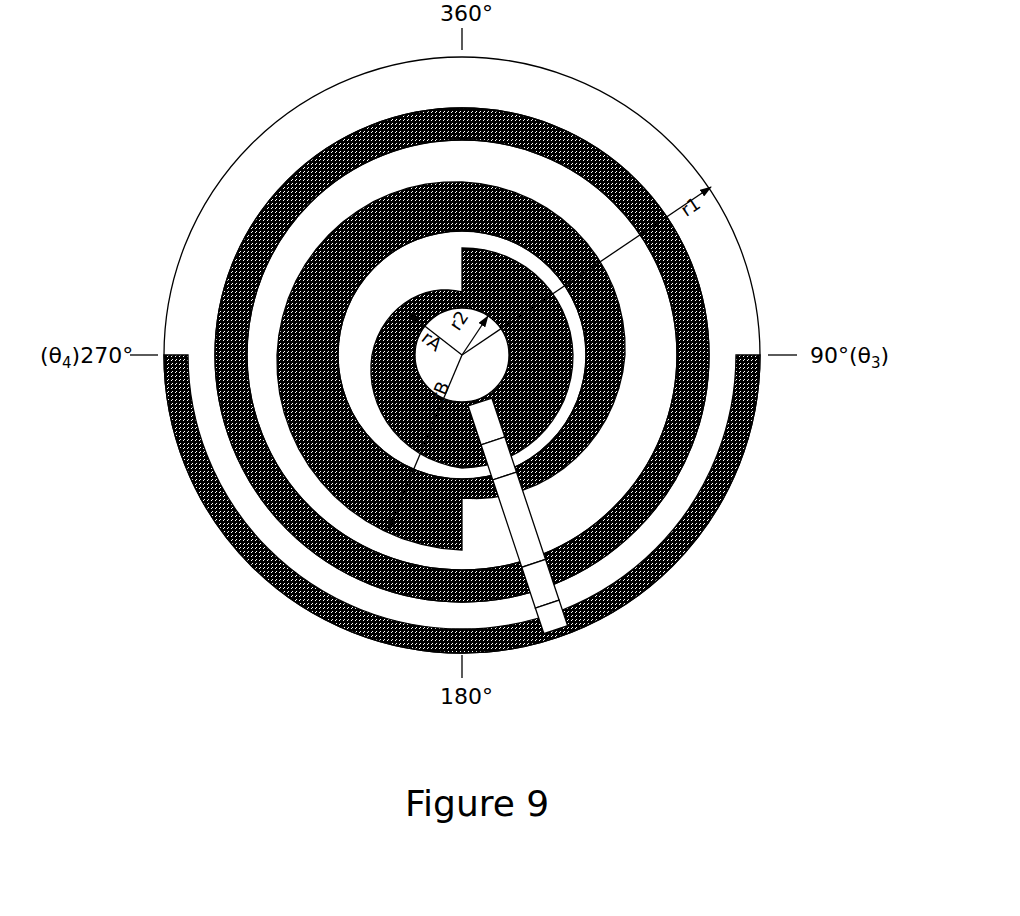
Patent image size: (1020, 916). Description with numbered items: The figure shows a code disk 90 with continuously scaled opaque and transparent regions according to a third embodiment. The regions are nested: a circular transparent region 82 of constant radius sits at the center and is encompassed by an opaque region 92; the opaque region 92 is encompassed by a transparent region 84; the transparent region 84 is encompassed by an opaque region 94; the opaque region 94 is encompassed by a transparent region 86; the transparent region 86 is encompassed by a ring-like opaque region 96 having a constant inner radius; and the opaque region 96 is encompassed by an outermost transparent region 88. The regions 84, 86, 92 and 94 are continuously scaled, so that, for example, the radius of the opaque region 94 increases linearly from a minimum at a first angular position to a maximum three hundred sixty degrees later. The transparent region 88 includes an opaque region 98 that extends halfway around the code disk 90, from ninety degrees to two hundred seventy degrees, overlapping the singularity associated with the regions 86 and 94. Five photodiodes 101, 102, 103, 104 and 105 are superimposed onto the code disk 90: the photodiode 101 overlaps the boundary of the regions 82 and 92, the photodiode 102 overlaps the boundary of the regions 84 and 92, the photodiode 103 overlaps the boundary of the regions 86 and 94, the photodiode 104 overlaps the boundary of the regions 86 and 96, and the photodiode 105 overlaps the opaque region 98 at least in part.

The transparent region 82 is at (430, 372).
The transparent region 84 is at (417, 282).
The transparent region 86 is at (641, 299).
The transparent region 88 is at (646, 151).
The code disk 90 is at (546, 69).
The opaque region 92 is at (370, 388).
The opaque region 94 is at (340, 510).
The opaque region 96 is at (676, 494).
The opaque region 98 is at (762, 408).
The photodiode 101 is at (563, 638).
The photodiode 102 is at (584, 575).
The photodiode 103 is at (611, 594).
The photodiode 104 is at (647, 637).
The photodiode 105 is at (672, 658).